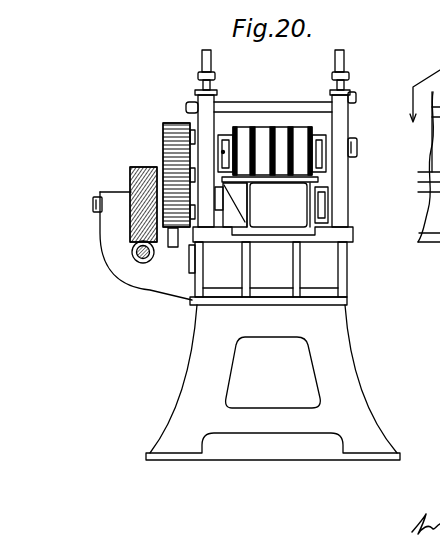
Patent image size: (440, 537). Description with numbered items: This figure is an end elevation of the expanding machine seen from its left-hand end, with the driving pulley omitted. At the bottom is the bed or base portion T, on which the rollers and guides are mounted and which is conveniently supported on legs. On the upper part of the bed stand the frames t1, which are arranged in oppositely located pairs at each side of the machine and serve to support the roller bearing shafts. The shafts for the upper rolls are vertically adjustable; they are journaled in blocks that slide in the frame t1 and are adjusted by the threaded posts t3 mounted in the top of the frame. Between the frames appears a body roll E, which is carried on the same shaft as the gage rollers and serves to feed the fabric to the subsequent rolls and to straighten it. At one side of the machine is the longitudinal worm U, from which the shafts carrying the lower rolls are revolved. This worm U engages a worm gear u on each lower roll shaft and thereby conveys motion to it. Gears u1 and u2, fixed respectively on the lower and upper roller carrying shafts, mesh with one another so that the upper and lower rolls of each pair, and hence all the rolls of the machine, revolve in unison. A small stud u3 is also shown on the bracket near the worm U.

The threaded post t3 is at (201, 59).
The frame t1 is at (345, 127).
The body roll E is at (282, 130).
The bed or base portion T is at (328, 267).
The longitudinal worm U is at (140, 263).
The worm gear u is at (136, 168).
The gear u1 is at (180, 229).
The gear u2 is at (170, 123).
The stud of bracket u3 is at (93, 203).